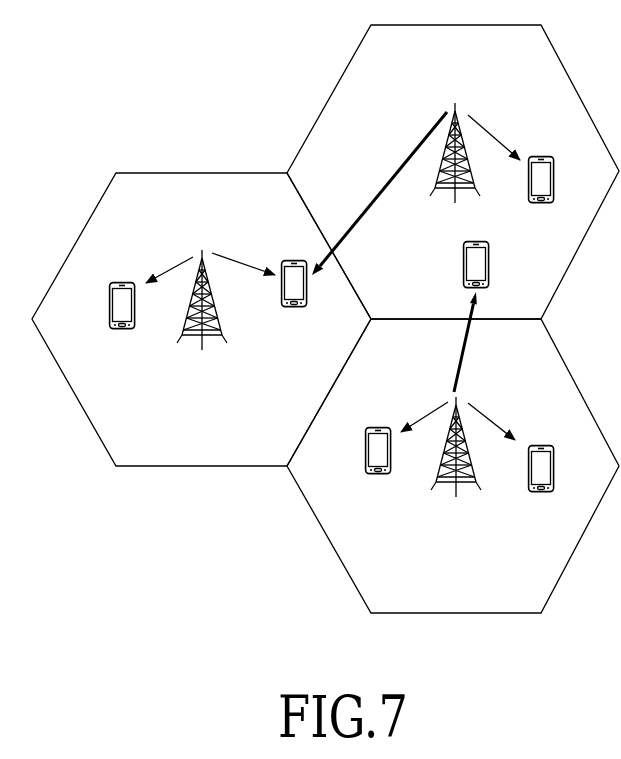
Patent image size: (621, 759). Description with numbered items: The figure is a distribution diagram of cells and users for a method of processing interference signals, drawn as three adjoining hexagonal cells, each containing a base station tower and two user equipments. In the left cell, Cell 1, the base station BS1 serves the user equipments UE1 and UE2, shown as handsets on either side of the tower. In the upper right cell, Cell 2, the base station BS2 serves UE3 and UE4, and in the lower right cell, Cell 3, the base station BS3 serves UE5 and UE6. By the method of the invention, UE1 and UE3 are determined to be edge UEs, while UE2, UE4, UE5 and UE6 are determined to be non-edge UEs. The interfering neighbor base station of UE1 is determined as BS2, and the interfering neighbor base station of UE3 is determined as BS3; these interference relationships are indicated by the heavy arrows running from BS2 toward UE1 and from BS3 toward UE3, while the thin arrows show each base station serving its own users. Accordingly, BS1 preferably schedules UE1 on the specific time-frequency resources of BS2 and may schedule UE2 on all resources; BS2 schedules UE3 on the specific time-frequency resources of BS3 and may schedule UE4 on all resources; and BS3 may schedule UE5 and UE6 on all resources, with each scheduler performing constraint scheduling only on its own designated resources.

The cell 1 Cell 1 is at (201, 319).
The cell 2 Cell 2 is at (453, 172).
The cell 3 Cell 3 is at (453, 466).
The base station BS1 is at (202, 315).
The base station BS2 is at (455, 138).
The base station BS3 is at (456, 462).
The user equipment UE1 is at (294, 299).
The user equipment UE2 is at (122, 321).
The user equipment UE3 is at (453, 265).
The user equipment UE4 is at (564, 180).
The user equipment UE5 is at (377, 469).
The user equipment UE6 is at (564, 469).